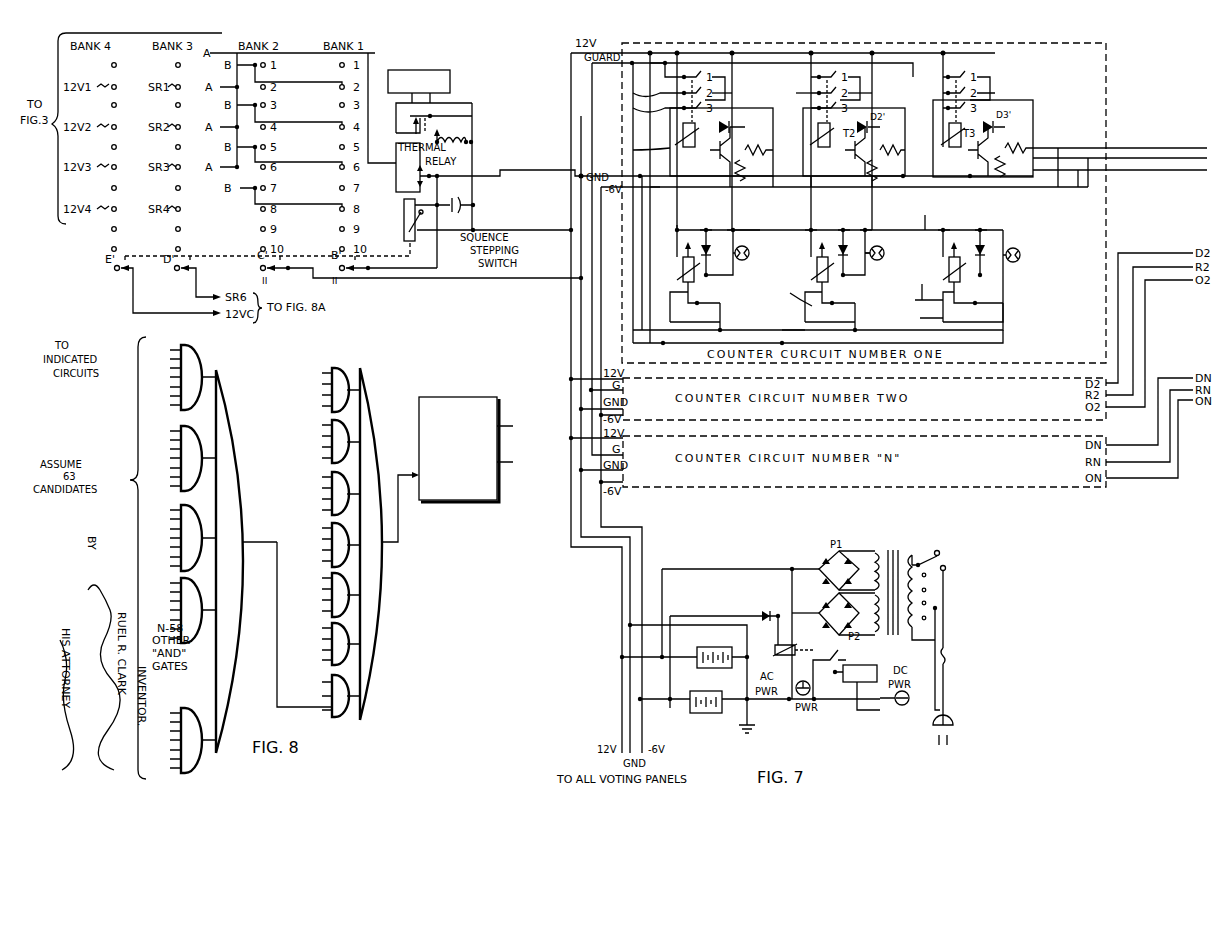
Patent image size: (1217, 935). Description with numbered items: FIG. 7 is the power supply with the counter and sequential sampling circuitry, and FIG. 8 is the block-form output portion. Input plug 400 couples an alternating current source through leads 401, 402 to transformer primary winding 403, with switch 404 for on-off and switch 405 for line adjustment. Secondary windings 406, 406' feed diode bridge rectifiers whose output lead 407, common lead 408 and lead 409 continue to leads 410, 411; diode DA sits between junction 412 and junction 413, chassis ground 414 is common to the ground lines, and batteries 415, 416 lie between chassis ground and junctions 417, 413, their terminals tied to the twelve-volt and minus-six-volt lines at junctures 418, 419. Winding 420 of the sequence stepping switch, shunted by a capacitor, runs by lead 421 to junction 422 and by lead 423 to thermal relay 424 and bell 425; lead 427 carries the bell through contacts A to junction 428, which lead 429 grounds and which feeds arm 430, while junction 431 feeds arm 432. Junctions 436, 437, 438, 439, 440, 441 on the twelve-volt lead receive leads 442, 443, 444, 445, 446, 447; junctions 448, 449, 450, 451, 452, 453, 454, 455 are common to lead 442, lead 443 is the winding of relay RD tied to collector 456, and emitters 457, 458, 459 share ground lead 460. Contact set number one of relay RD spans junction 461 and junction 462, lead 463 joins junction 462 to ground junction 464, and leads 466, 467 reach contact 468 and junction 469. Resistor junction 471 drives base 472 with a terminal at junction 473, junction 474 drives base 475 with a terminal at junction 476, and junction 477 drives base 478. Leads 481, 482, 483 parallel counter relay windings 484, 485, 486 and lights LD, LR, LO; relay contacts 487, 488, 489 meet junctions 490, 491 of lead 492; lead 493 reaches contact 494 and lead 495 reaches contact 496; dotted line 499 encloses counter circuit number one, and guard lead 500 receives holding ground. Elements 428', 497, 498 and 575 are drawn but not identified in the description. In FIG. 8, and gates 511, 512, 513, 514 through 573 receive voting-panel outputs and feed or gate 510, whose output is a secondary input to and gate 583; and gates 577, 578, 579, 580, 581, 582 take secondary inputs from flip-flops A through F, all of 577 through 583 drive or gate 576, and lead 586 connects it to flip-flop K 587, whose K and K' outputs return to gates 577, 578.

In FIG. 7, the input plug 400 is at (930, 725).
In FIG. 7, the lead 401 is at (946, 612).
In FIG. 7, the lead 402 is at (946, 634).
In FIG. 7, the transformer primary winding 403 is at (920, 560).
In FIG. 7, the switch 404 is at (935, 549).
In FIG. 7, the switch 405 is at (929, 608).
In FIG. 7, the secondary winding 406 is at (868, 577).
In FIG. 7, the secondary winding 406' is at (869, 620).
In FIG. 7, the output lead 407 is at (797, 569).
In FIG. 7, the common lead 408 is at (878, 666).
In FIG. 7, the lead 409 is at (802, 611).
In FIG. 7, the lead 410 is at (745, 569).
In FIG. 7, the lead 411 is at (784, 636).
In FIG. 7, the junction 412 is at (779, 603).
In FIG. 7, the junction 413 is at (671, 708).
In FIG. 7, the chassis ground 414 is at (750, 706).
In FIG. 7, the battery 415 is at (699, 646).
In FIG. 7, the battery 416 is at (705, 713).
In FIG. 7, the junction 417 is at (661, 662).
In FIG. 7, the juncture 418 is at (621, 660).
In FIG. 7, the juncture 419 is at (645, 702).
In FIG. 7, the winding 420 is at (403, 216).
In FIG. 7, the lead 421 is at (438, 264).
In FIG. 7, the junction 422 is at (388, 281).
In FIG. 7, the lead 423 is at (474, 186).
In FIG. 7, the thermal relay 424 is at (441, 138).
In FIG. 7, the bell 425 is at (431, 68).
In FIG. 7, the lead 427 is at (398, 114).
In FIG. 7, the junction 428 is at (776, 434).
In FIG. 7, the guard bus 428' is at (716, 258).
In FIG. 7, the lead 429 is at (581, 501).
In FIG. 7, the arm 430 is at (276, 272).
In FIG. 7, the junction 431 is at (446, 211).
In FIG. 7, the arm 432 is at (357, 272).
In FIG. 7, the junction 436 is at (650, 43).
In FIG. 7, the junction 437 is at (677, 43).
In FIG. 7, the junction 438 is at (732, 43).
In FIG. 7, the junction 439 is at (811, 43).
In FIG. 7, the junction 440 is at (872, 43).
In FIG. 7, the junction 441 is at (943, 43).
In FIG. 7, the lead 442 is at (662, 112).
In FIG. 7, the lead 443 is at (677, 98).
In FIG. 7, the lead 444 is at (730, 80).
In FIG. 7, the lead 445 is at (803, 90).
In FIG. 7, the lead 446 is at (886, 80).
In FIG. 7, the lead 447 is at (884, 93).
In FIG. 7, the junction 448 is at (677, 227).
In FIG. 7, the junction 449 is at (706, 227).
In FIG. 7, the junction 450 is at (742, 228).
In FIG. 7, the junction 451 is at (811, 228).
In FIG. 7, the junction 452 is at (843, 228).
In FIG. 7, the junction 453 is at (865, 228).
In FIG. 7, the junction 454 is at (943, 228).
In FIG. 7, the junction 455 is at (981, 228).
In FIG. 7, the collector 456 is at (738, 146).
In FIG. 7, the emitter 457 is at (672, 185).
In FIG. 7, the emitter 458 is at (820, 160).
In FIG. 7, the emitter 459 is at (955, 158).
In FIG. 7, the ground lead 460 is at (680, 160).
In FIG. 7, the junction 461 is at (681, 70).
In FIG. 7, the junction 462 is at (734, 96).
In FIG. 7, the lead 463 is at (752, 140).
In FIG. 7, the ground junction 464 is at (736, 226).
In FIG. 7, the lead 466 is at (652, 99).
In FIG. 7, the lead 467 is at (662, 152).
In FIG. 7, the contact 468 is at (705, 280).
In FIG. 7, the junction 469 is at (705, 318).
In FIG. 7, the junction 471 is at (740, 125).
In FIG. 7, the base 472 is at (706, 190).
In FIG. 7, the junction 473 is at (738, 186).
In FIG. 7, the junction 474 is at (855, 190).
In FIG. 7, the base 475 is at (822, 186).
In FIG. 7, the junction 476 is at (872, 186).
In FIG. 7, the junction 477 is at (988, 182).
In FIG. 7, the base 478 is at (990, 130).
In FIG. 7, the lead 481 is at (742, 270).
In FIG. 7, the lead 482 is at (872, 268).
In FIG. 7, the lead 483 is at (1006, 268).
In FIG. 7, the counter relay winding 484 is at (708, 256).
In FIG. 7, the counter relay winding 485 is at (818, 270).
In FIG. 7, the counter relay winding 486 is at (922, 258).
In FIG. 7, the relay contact 487 is at (575, 279).
In FIG. 7, the relay contact 488 is at (818, 298).
In FIG. 7, the relay contact 489 is at (922, 284).
In FIG. 7, the junction 490 is at (664, 343).
In FIG. 7, the junction 491 is at (780, 342).
In FIG. 7, the lead 492 is at (920, 329).
In FIG. 7, the lead 493 is at (790, 293).
In FIG. 7, the contact 494 is at (805, 332).
In FIG. 7, the lead 495 is at (775, 186).
In FIG. 7, the contact 496 is at (925, 215).
In FIG. 7, the relay coil CR 497 is at (835, 282).
In FIG. 7, the relay coil CO 498 is at (985, 280).
In FIG. 7, the dotted line 499 is at (472, 146).
In FIG. 7, the guard lead 500 is at (590, 426).
In FIG. 8, the or gate 510 is at (242, 502).
In FIG. 8, the and gate 511 is at (193, 354).
In FIG. 8, the and gate 512 is at (196, 435).
In FIG. 8, the and gate 513 is at (196, 514).
In FIG. 8, the and gate 514 is at (198, 587).
In FIG. 8, the and gate 573 is at (198, 717).
In FIG. 8, the lead 575 is at (300, 712).
In FIG. 8, the or gate 576 is at (395, 560).
In FIG. 8, the and gate 577 is at (332, 371).
In FIG. 8, the and gate 578 is at (332, 423).
In FIG. 8, the and gate 579 is at (332, 475).
In FIG. 8, the and gate 580 is at (332, 526).
In FIG. 8, the and gate 581 is at (332, 576).
In FIG. 8, the and gate 582 is at (332, 626).
In FIG. 8, the and gate 583 is at (332, 678).
In FIG. 8, the lead 586 is at (404, 527).
In FIG. 8, the flip-flop K 587 is at (437, 503).